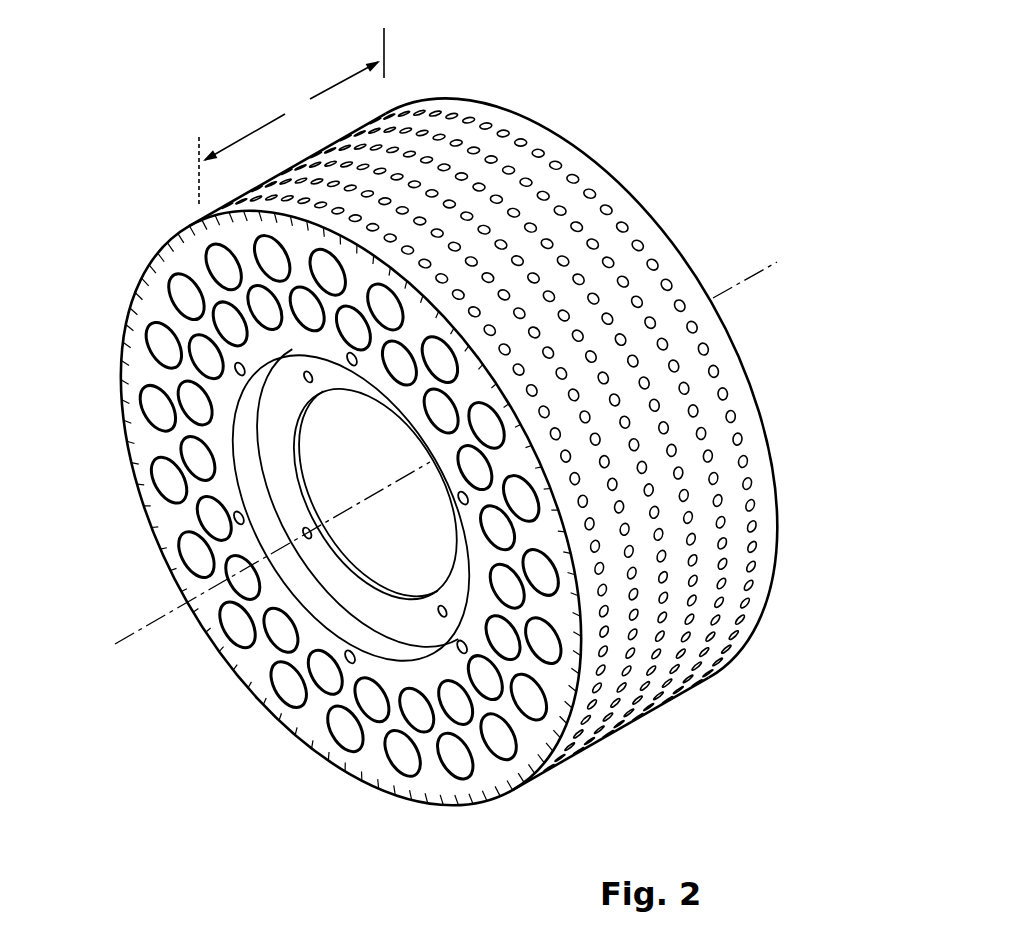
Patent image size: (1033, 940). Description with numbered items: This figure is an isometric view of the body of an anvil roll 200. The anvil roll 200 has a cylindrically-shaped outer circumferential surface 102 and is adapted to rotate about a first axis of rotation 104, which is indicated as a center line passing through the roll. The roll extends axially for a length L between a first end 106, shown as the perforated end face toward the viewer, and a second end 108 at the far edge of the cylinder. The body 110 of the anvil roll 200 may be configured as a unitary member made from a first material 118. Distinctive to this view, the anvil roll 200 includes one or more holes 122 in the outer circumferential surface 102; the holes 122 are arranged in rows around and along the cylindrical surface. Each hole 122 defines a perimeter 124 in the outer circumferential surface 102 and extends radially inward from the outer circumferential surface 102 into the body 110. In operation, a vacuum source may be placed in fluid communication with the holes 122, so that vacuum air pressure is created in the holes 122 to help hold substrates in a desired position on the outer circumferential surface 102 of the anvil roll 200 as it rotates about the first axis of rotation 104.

The anvil roll 200 is at (118, 207).
The outer circumferential surface 102 is at (505, 121).
The first axis of rotation 104 is at (122, 634).
The first end 106 is at (318, 716).
The second end 108 is at (594, 158).
The body 110 is at (462, 104).
The first material 118 is at (176, 315).
The holes 122 is at (664, 285).
The perimeter 124 is at (680, 309).